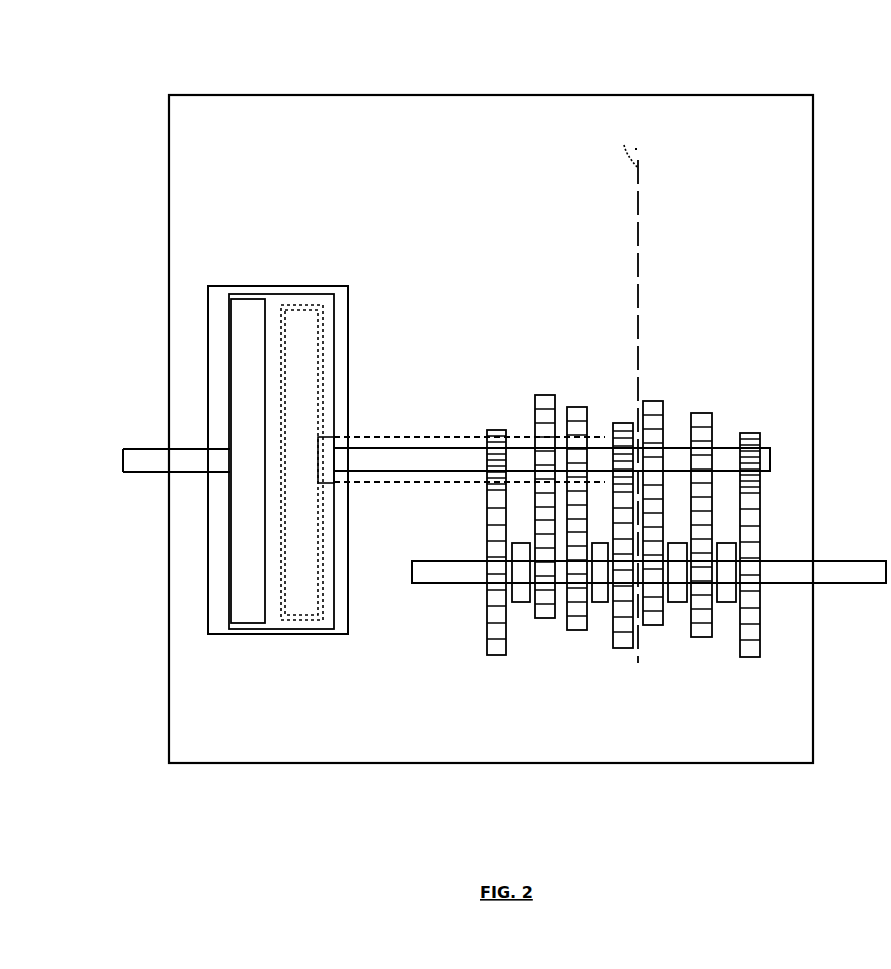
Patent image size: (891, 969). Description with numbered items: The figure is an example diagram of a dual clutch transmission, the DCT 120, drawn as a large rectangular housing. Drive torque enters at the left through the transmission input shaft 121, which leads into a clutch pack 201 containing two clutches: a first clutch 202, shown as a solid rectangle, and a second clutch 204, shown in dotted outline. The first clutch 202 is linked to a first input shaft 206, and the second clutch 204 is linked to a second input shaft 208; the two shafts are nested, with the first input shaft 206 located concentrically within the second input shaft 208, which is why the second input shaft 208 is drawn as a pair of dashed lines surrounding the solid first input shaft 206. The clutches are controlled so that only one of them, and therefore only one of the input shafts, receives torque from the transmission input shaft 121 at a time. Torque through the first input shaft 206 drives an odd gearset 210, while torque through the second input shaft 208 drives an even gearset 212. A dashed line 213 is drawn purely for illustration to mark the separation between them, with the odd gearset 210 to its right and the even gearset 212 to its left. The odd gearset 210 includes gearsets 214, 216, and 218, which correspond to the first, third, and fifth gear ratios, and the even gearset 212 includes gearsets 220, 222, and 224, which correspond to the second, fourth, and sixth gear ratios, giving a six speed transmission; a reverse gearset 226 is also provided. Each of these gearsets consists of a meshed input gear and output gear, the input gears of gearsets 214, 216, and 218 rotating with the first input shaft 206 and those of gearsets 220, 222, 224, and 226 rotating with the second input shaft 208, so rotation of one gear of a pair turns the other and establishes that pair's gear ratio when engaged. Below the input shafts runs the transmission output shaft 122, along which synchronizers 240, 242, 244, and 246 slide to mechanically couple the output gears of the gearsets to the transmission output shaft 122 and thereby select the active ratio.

The dual clutch transmission 120 is at (258, 95).
The transmission input shaft 121 is at (163, 449).
The transmission output shaft 122 is at (871, 561).
The clutch pack 201 is at (335, 286).
The first clutch 202 is at (237, 297).
The second clutch 204 is at (290, 302).
The first input shaft 206 is at (421, 447).
The second input shaft 208 is at (456, 436).
The odd gearset 210 is at (715, 422).
The even gearset 212 is at (543, 421).
The dashed line 213 is at (619, 143).
The first gear ratio gearset 214 is at (751, 420).
The third gear ratio gearset 216 is at (702, 402).
The fifth gear ratio gearset 218 is at (656, 392).
The second gear ratio gearset 220 is at (621, 412).
The fourth gear ratio gearset 222 is at (577, 394).
The sixth gear ratio gearset 224 is at (544, 386).
The reverse gearset 226 is at (497, 420).
The synchronizer 240 is at (727, 608).
The synchronizer 242 is at (678, 608).
The synchronizer 244 is at (600, 608).
The synchronizer 246 is at (521, 608).